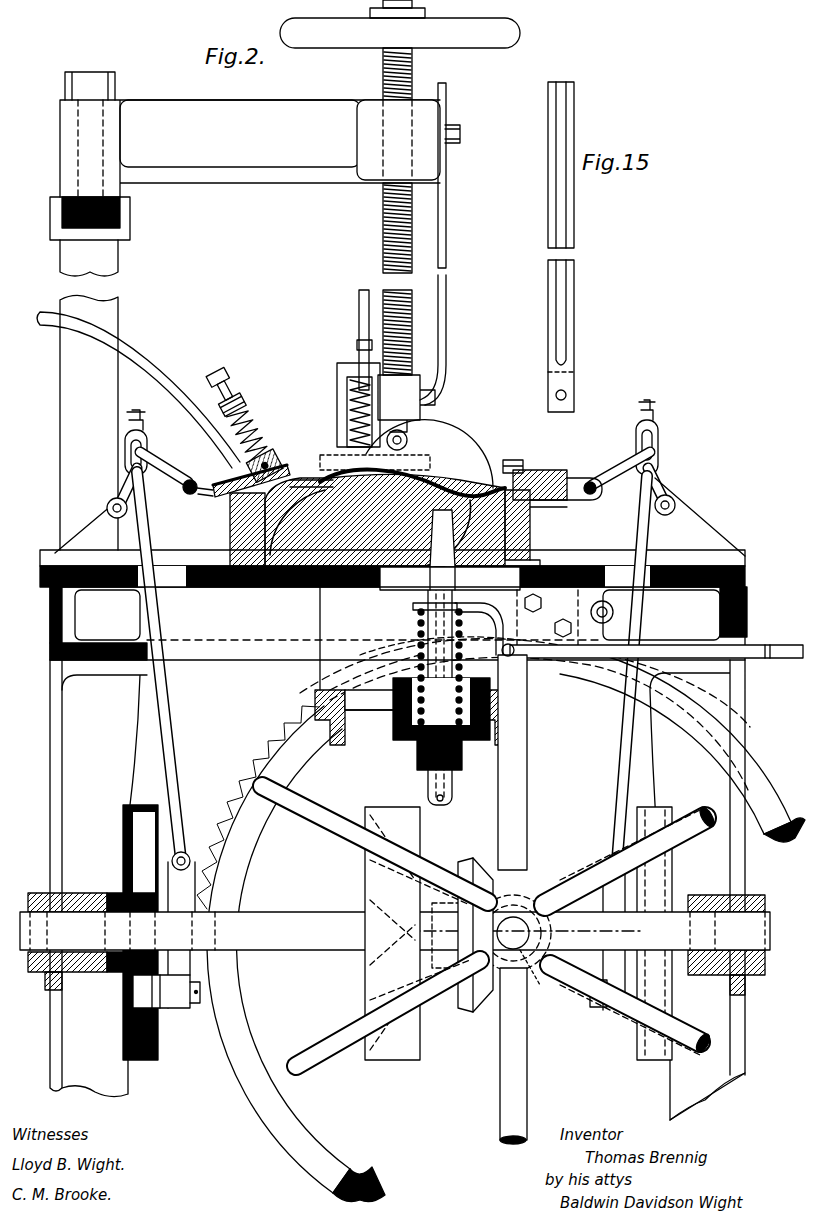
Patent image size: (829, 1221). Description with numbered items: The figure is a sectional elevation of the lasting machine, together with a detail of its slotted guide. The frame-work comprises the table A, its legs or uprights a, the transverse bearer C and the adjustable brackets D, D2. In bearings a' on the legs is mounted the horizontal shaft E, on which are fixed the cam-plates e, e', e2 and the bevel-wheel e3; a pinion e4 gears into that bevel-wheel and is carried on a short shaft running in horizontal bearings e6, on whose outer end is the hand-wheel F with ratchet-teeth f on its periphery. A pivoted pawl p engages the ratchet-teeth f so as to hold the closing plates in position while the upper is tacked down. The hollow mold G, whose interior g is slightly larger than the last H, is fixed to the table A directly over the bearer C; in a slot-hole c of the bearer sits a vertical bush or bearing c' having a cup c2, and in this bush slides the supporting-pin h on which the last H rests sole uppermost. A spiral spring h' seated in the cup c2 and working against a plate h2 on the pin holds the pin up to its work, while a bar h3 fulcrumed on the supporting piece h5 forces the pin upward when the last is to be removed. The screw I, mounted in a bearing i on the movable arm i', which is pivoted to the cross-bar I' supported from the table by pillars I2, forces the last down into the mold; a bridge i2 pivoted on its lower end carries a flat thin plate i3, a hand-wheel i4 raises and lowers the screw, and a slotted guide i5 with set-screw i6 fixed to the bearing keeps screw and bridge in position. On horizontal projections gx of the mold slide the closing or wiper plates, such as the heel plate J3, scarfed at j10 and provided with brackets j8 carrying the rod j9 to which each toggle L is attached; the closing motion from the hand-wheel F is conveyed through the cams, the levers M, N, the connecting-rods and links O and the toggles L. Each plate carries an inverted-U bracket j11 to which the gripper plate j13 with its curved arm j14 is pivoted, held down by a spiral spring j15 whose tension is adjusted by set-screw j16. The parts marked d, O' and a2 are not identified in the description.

In FIG. 2, the bolt d is at (90, 72).
In FIG. 2, the screw I is at (383, 211).
In FIG. 2, the cross-bar I' is at (71, 218).
In FIG. 2, the pillars I2 is at (89, 422).
In FIG. 2, the bearing i is at (398, 275).
In FIG. 2, the movable arm i' is at (250, 148).
In FIG. 2, the bridge i2 is at (418, 440).
In FIG. 2, the flat thin metal plate i3 is at (480, 480).
In FIG. 2, the hand-wheel i4 is at (468, 48).
In FIG. 2, the slotted guide i5 is at (446, 218).
In FIG. 15, the slotted guide i5 is at (574, 218).
In FIG. 2, the set-screw i6 is at (460, 134).
In FIG. 2, the brackets j8 is at (190, 480).
In FIG. 2, the pin or rod j9 is at (186, 494).
In FIG. 2, the scarfed or recessed end j10 is at (210, 498).
In FIG. 2, the inverted-U-shaped frame or bracket j11 is at (240, 405).
In FIG. 2, the gripper or retaining plate j13 is at (260, 478).
In FIG. 2, the curved arm or lever j14 is at (135, 345).
In FIG. 2, the spiral spring j15 is at (250, 440).
In FIG. 2, the set-screw j16 is at (228, 368).
In FIG. 2, the heel closing or wiper plate J3 is at (548, 464).
In FIG. 2, the connecting-rods and links O is at (392, 671).
In FIG. 2, the clevis O' is at (413, 437).
In FIG. 2, the toggle L is at (165, 466).
In FIG. 2, the adjustable bracket D is at (91, 525).
In FIG. 2, the adjustable bracket D2 is at (700, 517).
In FIG. 2, the hollow mold G is at (255, 536).
In FIG. 2, the last H is at (385, 520).
In FIG. 2, the interior of mold g is at (574, 515).
In FIG. 2, the flange or projecting pieces gx is at (222, 500).
In FIG. 2, the supporting-pin h is at (454, 657).
In FIG. 2, the spiral spring h' is at (425, 667).
In FIG. 2, the plate or projection h2 is at (412, 604).
In FIG. 2, the bar h3 is at (527, 685).
In FIG. 2, the bearing or supporting piece h5 is at (412, 612).
In FIG. 2, the legs or uprights a is at (397, 890).
In FIG. 2, the bearings a' is at (396, 928).
In FIG. 2, the table plate a2 is at (450, 578).
In FIG. 2, the table A is at (398, 623).
In FIG. 2, the transverse bearer C is at (318, 675).
In FIG. 2, the slot-hole c is at (375, 700).
In FIG. 2, the vertical bush or bearing c' is at (431, 724).
In FIG. 2, the cup or recess c2 is at (475, 722).
In FIG. 2, the cam-plate e is at (151, 919).
In FIG. 2, the cam-plate e' is at (412, 933).
In FIG. 2, the cam-plate e2 is at (645, 808).
In FIG. 2, the bevel-wheel e3 is at (470, 870).
In FIG. 2, the pinion e4 is at (525, 900).
In FIG. 2, the horizontal bearings e6 is at (522, 956).
In FIG. 2, the horizontal shaft E is at (395, 933).
In FIG. 2, the hand-wheel F is at (250, 872).
In FIG. 2, the ratchet-teeth f is at (265, 742).
In FIG. 2, the lever M is at (176, 1008).
In FIG. 2, the lever N is at (598, 1007).
In FIG. 2, the pivoted pawl p is at (613, 620).